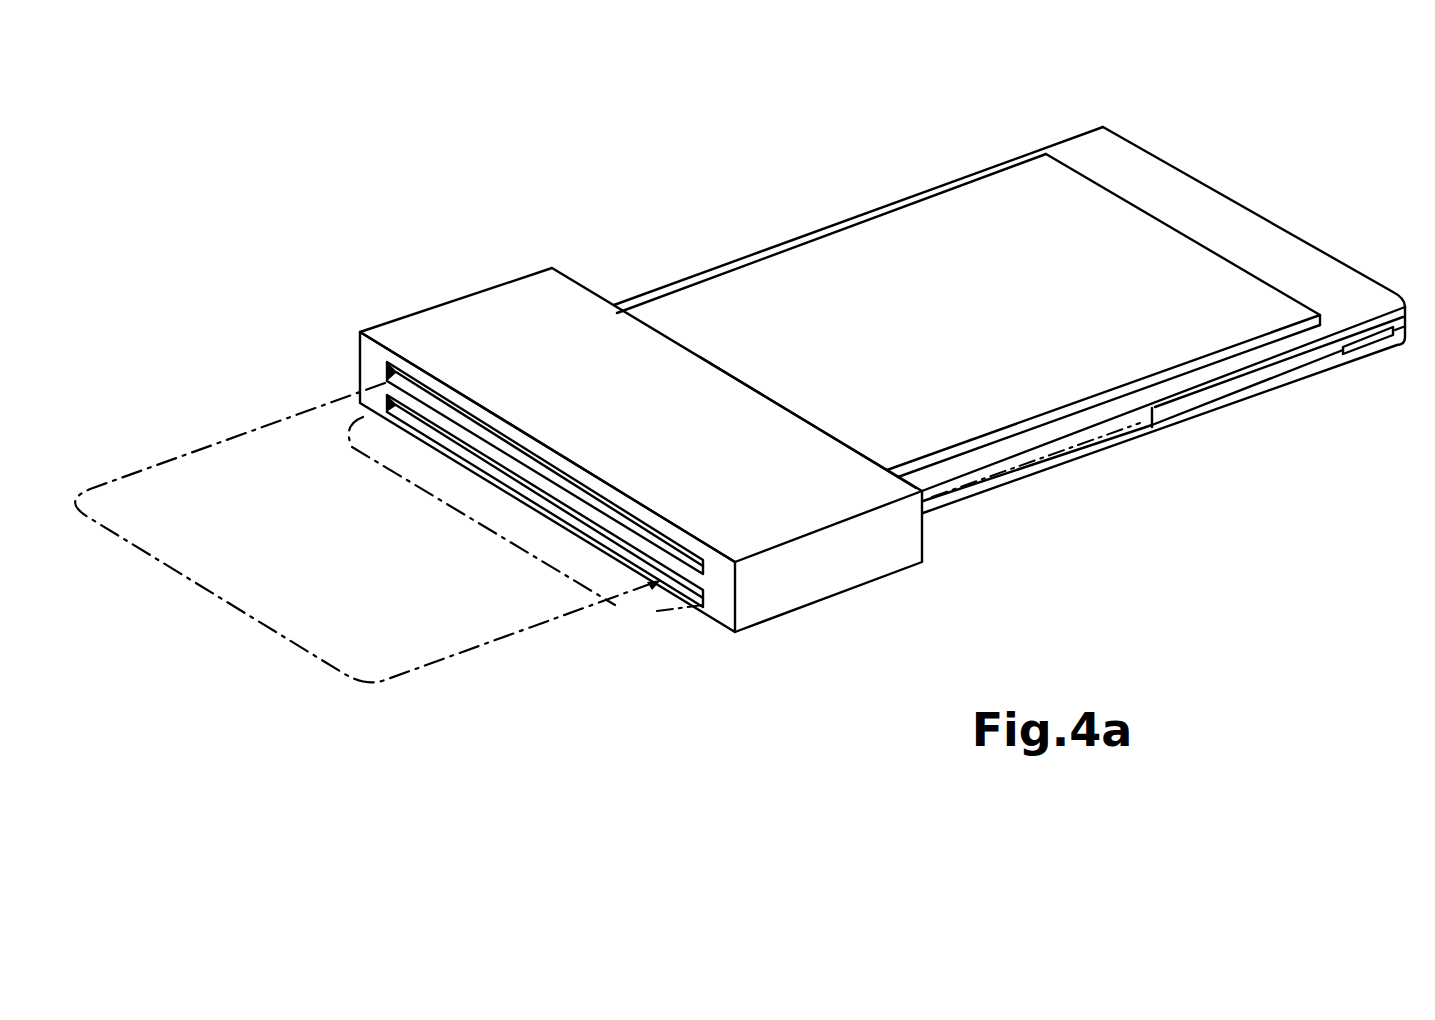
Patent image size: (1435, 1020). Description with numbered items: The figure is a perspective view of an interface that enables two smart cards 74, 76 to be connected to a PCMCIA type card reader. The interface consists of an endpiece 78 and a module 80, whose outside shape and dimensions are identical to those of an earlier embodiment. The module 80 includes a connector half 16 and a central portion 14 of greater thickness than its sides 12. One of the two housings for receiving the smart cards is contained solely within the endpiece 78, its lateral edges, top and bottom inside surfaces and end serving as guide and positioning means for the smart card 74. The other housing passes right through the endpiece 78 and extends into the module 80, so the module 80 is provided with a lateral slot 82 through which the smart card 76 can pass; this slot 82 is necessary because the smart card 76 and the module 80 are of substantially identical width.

The sides 12 is at (1250, 382).
The central portion 14 is at (969, 329).
The connector half 16 is at (1228, 223).
The smart card 74 is at (259, 538).
The smart card 76 is at (1058, 451).
The endpiece 78 is at (419, 296).
The module 80 is at (759, 238).
The lateral slot 82 is at (995, 481).